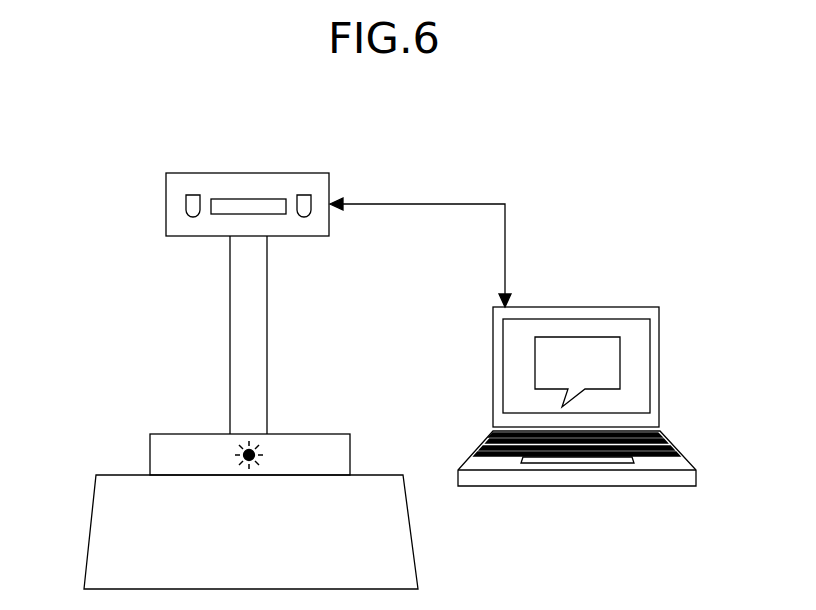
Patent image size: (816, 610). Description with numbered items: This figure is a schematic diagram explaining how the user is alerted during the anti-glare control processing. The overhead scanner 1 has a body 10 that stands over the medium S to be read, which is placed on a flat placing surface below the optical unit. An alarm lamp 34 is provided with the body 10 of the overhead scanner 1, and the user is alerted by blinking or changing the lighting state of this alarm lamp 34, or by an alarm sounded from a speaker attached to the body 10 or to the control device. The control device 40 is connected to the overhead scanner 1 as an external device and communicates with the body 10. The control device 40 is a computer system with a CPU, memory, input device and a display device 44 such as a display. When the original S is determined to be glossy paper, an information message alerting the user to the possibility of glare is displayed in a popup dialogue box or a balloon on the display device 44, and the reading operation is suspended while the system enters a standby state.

The overhead scanner 1 is at (60, 136).
The body 10 is at (230, 324).
The alarm lamp 34 is at (236, 450).
The medium to be read (original) S is at (101, 538).
The control device 40 is at (610, 307).
The display device 44 is at (637, 367).